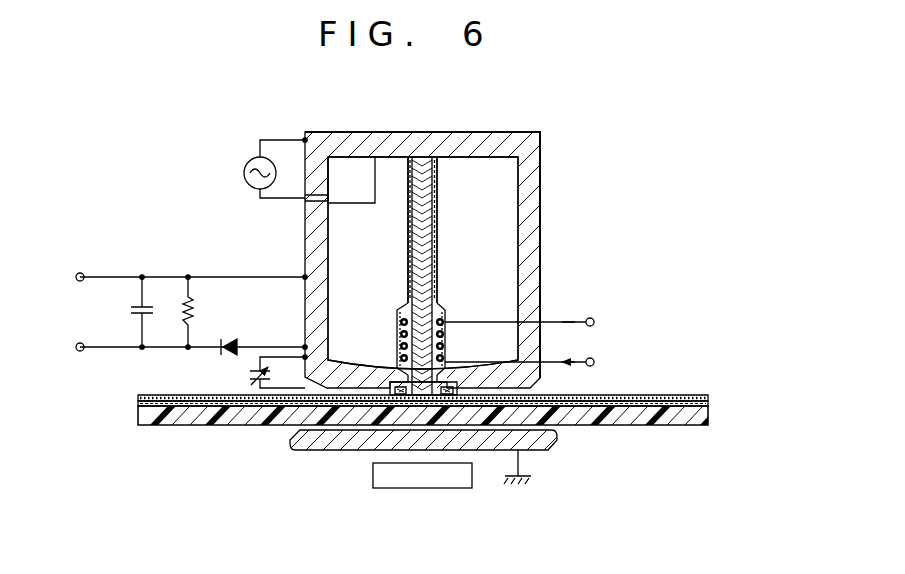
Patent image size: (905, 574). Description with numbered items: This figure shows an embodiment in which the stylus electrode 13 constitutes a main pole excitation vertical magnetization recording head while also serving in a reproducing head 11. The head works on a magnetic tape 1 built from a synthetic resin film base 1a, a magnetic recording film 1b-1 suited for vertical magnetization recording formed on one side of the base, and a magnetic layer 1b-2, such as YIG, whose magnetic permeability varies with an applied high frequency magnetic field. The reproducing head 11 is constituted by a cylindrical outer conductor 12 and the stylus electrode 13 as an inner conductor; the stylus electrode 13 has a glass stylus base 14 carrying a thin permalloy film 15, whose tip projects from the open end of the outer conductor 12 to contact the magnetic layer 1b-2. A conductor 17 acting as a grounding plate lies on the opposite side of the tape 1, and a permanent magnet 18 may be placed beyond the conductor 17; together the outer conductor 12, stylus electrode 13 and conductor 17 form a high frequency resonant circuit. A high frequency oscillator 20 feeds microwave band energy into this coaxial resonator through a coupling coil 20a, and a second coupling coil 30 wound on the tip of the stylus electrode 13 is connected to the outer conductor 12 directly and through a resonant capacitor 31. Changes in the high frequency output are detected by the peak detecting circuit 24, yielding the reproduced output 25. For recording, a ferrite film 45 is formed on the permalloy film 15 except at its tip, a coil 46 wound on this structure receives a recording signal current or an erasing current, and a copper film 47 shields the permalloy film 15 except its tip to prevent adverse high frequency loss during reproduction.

The magnetic tape 1 is at (454, 380).
The synthetic resin film base 1a is at (708, 420).
The magnetic recording film 1b-1 is at (645, 396).
The magnetic layer 1b-2 is at (708, 402).
The reproducing head 11 is at (548, 232).
The cylindrical outer conductor 12 is at (546, 288).
The stylus electrode 13 is at (382, 306).
The stylus base 14 is at (438, 192).
The permalloy film 15 is at (410, 240).
The conductor 17 is at (330, 452).
The permanent magnet 18 is at (422, 490).
The high frequency oscillator 20 is at (243, 174).
The coupling coil 20a is at (347, 204).
The peak detecting circuit 24 is at (233, 298).
The reproduced output 25 is at (80, 332).
The second coupling coil 30 is at (447, 381).
The resonant capacitor 31 is at (246, 377).
The ferrite film 45 is at (410, 272).
The coil 46 is at (438, 320).
The copper film 47 is at (438, 236).